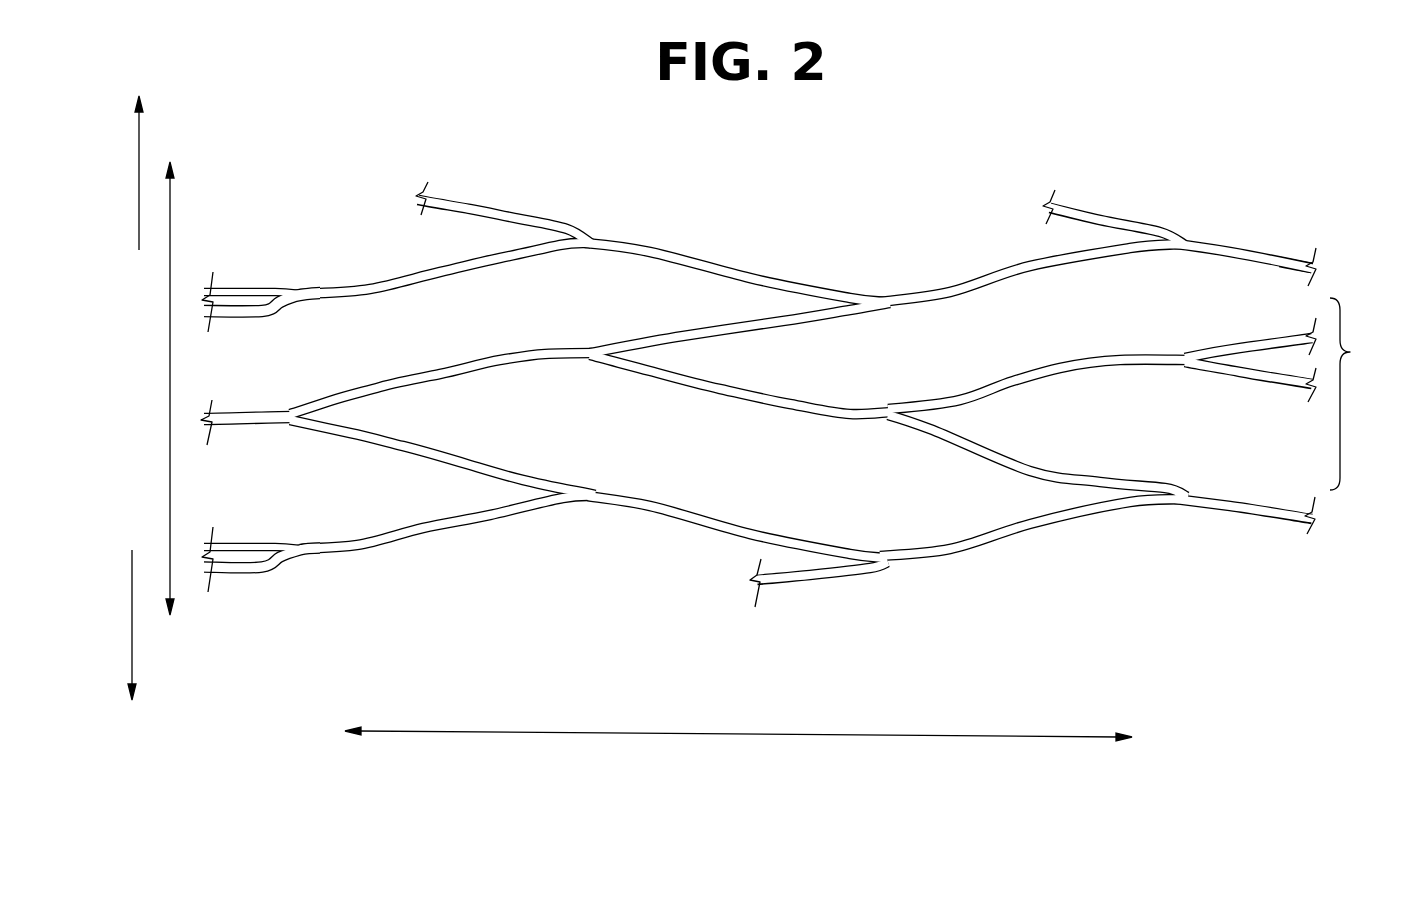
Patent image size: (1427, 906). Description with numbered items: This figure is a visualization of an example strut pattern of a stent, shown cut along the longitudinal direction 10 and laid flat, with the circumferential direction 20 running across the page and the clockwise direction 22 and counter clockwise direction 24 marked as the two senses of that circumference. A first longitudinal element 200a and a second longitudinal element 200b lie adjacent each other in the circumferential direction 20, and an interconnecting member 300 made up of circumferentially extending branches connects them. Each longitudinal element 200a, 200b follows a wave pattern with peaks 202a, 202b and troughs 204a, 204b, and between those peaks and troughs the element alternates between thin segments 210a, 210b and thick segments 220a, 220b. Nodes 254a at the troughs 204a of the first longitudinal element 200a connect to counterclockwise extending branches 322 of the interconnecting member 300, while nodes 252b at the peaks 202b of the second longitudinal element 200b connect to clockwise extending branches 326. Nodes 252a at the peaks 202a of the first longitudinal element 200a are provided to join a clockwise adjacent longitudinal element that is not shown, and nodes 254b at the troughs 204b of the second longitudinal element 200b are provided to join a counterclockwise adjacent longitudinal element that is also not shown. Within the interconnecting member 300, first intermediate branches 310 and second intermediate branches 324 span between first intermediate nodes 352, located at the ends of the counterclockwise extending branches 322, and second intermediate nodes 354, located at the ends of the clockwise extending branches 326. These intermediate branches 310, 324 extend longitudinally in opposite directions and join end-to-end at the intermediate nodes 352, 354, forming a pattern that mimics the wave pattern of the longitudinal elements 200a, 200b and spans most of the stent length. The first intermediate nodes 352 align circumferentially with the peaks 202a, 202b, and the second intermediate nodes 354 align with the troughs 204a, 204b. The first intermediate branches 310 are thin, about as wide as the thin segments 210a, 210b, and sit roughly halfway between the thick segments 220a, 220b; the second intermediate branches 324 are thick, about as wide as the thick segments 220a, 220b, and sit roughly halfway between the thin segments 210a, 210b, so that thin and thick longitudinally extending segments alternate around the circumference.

The longitudinal direction 10 is at (684, 740).
The circumferential direction 20 is at (172, 228).
The clockwise direction 22 is at (137, 173).
The counter clockwise direction 24 is at (132, 632).
The first longitudinal element 200a is at (1305, 283).
The second longitudinal element 200b is at (1230, 507).
The peaks 202a is at (573, 252).
The peaks 202b is at (575, 502).
The troughs 204a is at (867, 290).
The troughs 204b is at (875, 543).
The thin segments 210a is at (722, 268).
The thin segments 210b is at (697, 517).
The thick segments 220a is at (365, 283).
The thick segments 220b is at (357, 541).
The nodes 252a is at (565, 222).
The nodes 252b is at (572, 482).
The nodes 254a is at (882, 310).
The nodes 254b is at (875, 568).
The interconnecting member 300 is at (1370, 394).
The first intermediate branches 310 is at (437, 371).
The counterclockwise extending branches 322 is at (668, 343).
The second intermediate branches 324 is at (785, 400).
The clockwise extending branches 326 is at (405, 447).
The first intermediate nodes 352 is at (590, 356).
The second intermediate nodes 354 is at (293, 410).